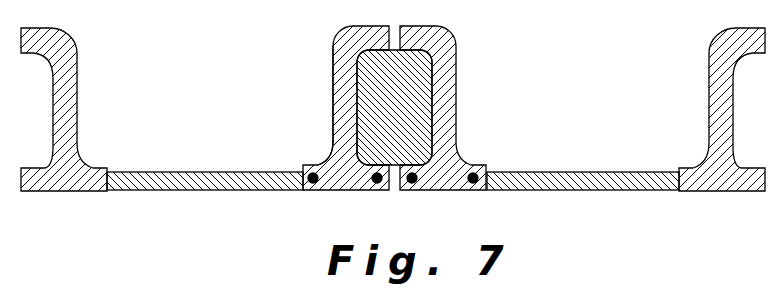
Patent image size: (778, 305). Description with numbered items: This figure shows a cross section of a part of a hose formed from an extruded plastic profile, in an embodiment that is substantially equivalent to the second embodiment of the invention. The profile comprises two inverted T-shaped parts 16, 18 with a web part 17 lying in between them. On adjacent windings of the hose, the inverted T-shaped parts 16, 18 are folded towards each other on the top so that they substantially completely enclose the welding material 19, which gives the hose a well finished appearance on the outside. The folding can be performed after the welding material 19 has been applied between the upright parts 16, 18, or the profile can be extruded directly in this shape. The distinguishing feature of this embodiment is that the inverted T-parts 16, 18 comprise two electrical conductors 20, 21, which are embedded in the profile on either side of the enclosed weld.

The inverted T-shaped part 16 is at (447, 100).
The web part 17 is at (217, 173).
The inverted T-shaped part 18 is at (350, 108).
The welding material 19 is at (393, 77).
The electrical conductor 20 is at (313, 190).
The electrical conductor 21 is at (412, 189).